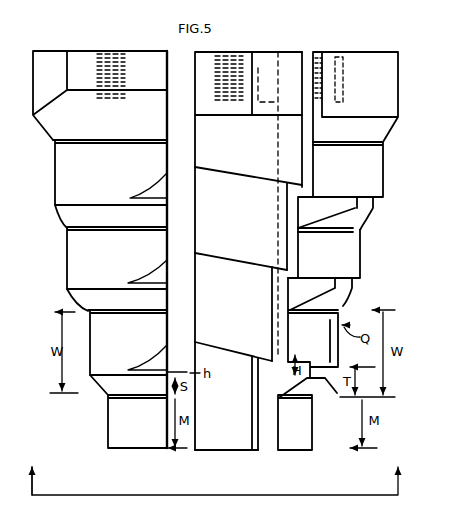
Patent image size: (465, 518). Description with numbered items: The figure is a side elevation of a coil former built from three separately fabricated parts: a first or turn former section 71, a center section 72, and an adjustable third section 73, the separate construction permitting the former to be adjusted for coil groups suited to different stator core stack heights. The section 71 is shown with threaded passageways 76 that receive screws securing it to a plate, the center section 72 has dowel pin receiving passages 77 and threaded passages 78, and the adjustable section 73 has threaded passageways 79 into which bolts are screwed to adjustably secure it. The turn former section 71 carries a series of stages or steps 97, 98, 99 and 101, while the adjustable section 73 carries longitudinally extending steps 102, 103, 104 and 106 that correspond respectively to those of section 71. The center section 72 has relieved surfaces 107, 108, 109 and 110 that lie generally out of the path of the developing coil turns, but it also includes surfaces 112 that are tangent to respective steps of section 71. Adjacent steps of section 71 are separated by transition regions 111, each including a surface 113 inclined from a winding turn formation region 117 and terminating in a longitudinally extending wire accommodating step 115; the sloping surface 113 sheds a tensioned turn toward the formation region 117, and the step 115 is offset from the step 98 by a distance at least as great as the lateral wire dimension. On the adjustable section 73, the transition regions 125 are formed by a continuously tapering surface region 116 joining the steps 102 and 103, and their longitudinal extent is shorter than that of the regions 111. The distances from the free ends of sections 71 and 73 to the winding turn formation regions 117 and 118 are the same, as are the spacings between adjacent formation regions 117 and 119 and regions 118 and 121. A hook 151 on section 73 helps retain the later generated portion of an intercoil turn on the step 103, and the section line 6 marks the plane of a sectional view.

The section line 6- 6 is at (213, 481).
The first section 71 is at (379, 53).
The center section 72 is at (299, 53).
The third section 73 is at (77, 51).
The threaded passageways 76 is at (338, 56).
The dowel pin receiving passages 77 is at (260, 66).
The threaded passages 78 is at (219, 62).
The threaded passageways 79 is at (99, 60).
The step 97 is at (295, 422).
The step 98 is at (328, 325).
The step 99 is at (324, 253).
The step 101 is at (340, 210).
The step 102 is at (264, 469).
The step 103 is at (128, 342).
The step 104 is at (117, 258).
The step 106 is at (110, 172).
The relieved surface 107 is at (226, 429).
The relieved surface 108 is at (233, 333).
The relieved surface 109 is at (241, 246).
The relieved surface 110 is at (248, 171).
The transition region 111 is at (367, 218).
The tangent surfaces 112 is at (307, 166).
The inclined surface 113 is at (322, 400).
The wire accommodating step 115 is at (325, 370).
The tapering surface region 116 is at (101, 394).
The winding turn formation region 117 is at (324, 412).
The winding turn formation region 118 is at (107, 390).
The winding turn formation region 119 is at (345, 309).
The winding turn formation region 121 is at (87, 309).
The transition region 125 is at (58, 217).
The hook 151 is at (143, 360).